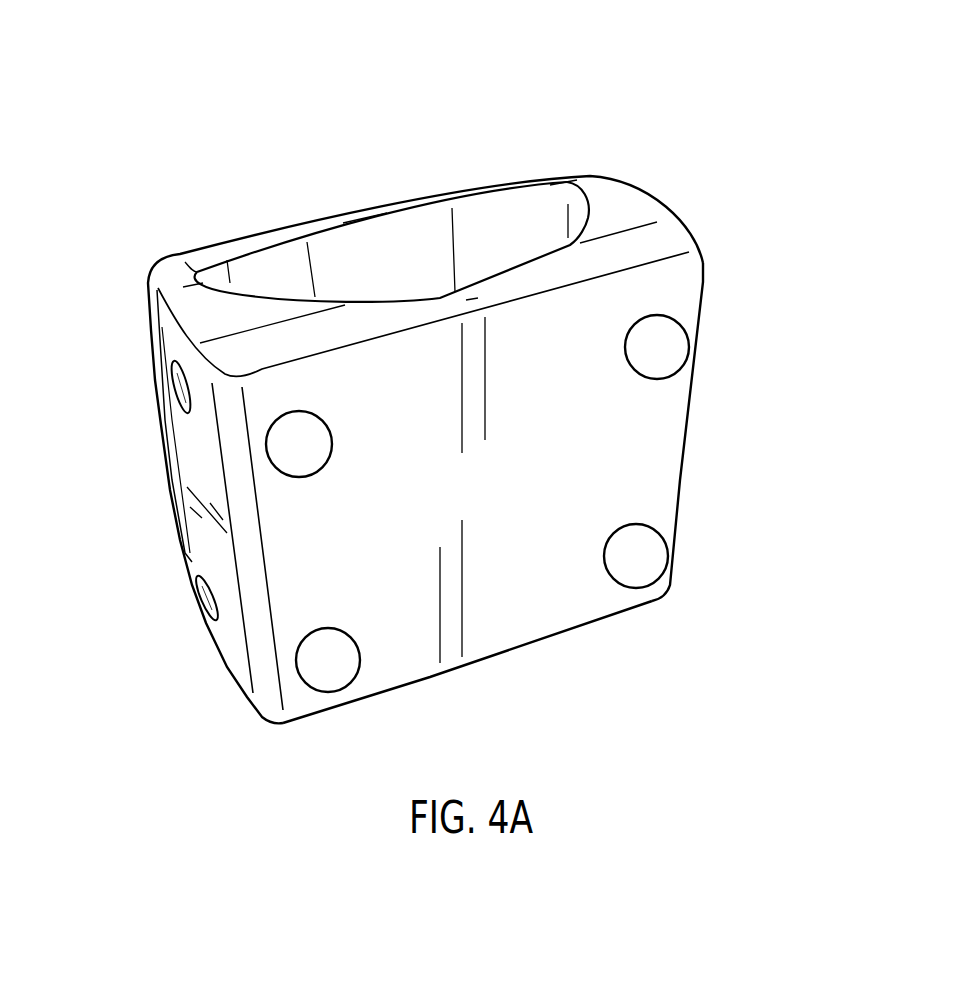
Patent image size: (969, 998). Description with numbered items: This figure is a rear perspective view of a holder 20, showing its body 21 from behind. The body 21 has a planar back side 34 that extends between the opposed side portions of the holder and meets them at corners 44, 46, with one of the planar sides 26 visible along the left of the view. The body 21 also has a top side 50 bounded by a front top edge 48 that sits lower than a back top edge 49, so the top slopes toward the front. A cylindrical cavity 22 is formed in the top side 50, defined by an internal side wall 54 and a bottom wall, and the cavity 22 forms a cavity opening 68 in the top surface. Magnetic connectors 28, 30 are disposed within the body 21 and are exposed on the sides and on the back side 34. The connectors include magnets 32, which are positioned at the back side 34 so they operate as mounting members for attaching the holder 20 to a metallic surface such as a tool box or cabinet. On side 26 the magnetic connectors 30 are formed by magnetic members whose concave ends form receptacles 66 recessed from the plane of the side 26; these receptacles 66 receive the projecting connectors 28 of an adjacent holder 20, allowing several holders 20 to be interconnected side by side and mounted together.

The holder 20 is at (218, 84).
The body 21 is at (613, 180).
The cavity 22 is at (373, 273).
The side 26 is at (190, 455).
The magnetic connectors 28 is at (627, 373).
The magnetic connectors 30 is at (171, 391).
The magnets 32 is at (312, 428).
The back side 34 is at (530, 607).
The corner 44 is at (690, 430).
The corner 46 is at (253, 617).
The front top edge 48 is at (330, 223).
The back top edge 49 is at (472, 305).
The top side 50 is at (217, 323).
The internal side wall 54 is at (513, 222).
The receptacle 66 is at (175, 380).
The cavity opening 68 is at (263, 242).